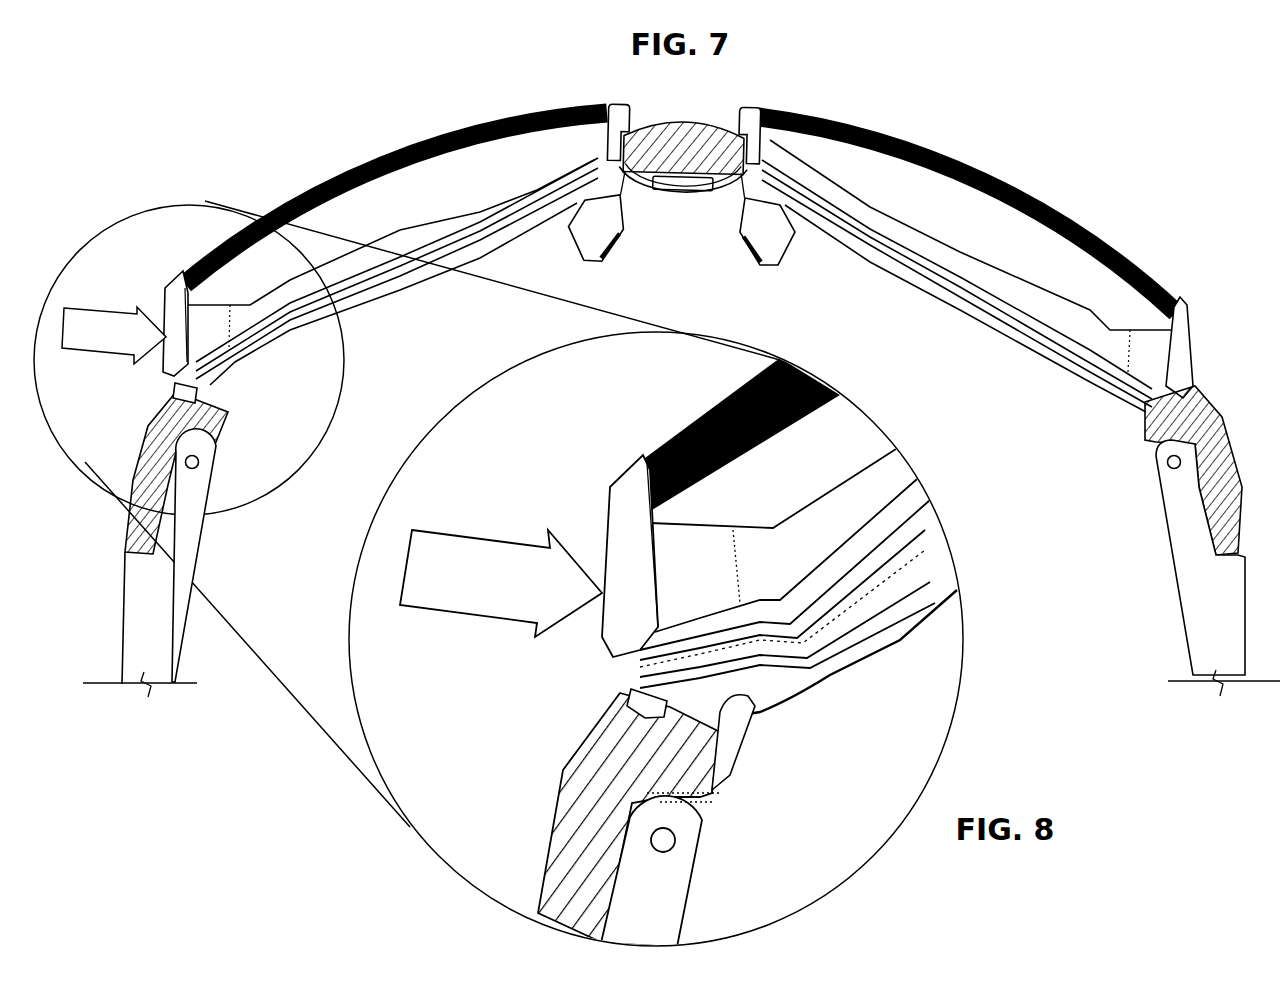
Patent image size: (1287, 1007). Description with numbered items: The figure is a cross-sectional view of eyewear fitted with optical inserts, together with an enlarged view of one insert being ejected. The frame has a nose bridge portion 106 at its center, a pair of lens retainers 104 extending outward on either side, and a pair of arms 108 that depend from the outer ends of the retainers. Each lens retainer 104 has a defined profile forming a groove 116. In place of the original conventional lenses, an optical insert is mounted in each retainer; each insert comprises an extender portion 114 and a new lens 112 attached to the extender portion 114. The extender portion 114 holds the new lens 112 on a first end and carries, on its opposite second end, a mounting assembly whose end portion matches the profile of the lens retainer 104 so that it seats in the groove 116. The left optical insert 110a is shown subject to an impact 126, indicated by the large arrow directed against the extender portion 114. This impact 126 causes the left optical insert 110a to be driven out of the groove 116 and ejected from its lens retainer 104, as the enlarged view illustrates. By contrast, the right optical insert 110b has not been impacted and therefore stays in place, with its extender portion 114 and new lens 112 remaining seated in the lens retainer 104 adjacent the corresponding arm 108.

In FIG. 7, the lens retainer 104 is at (437, 292).
In FIG. 7, the nose bridge portion 106 is at (685, 122).
In FIG. 7, the arm 108 is at (162, 657).
In FIG. 7, the left optical insert 110a is at (260, 128).
In FIG. 7, the right optical insert 110b is at (1192, 198).
In FIG. 7, the new lens 112 is at (397, 152).
In FIG. 7, the extender portion 114 is at (175, 318).
In FIG. 8, the extender portion 114 is at (635, 510).
In FIG. 8, the groove 116 is at (607, 720).
In FIG. 7, the impact 126 is at (114, 335).
In FIG. 8, the impact 126 is at (501, 583).